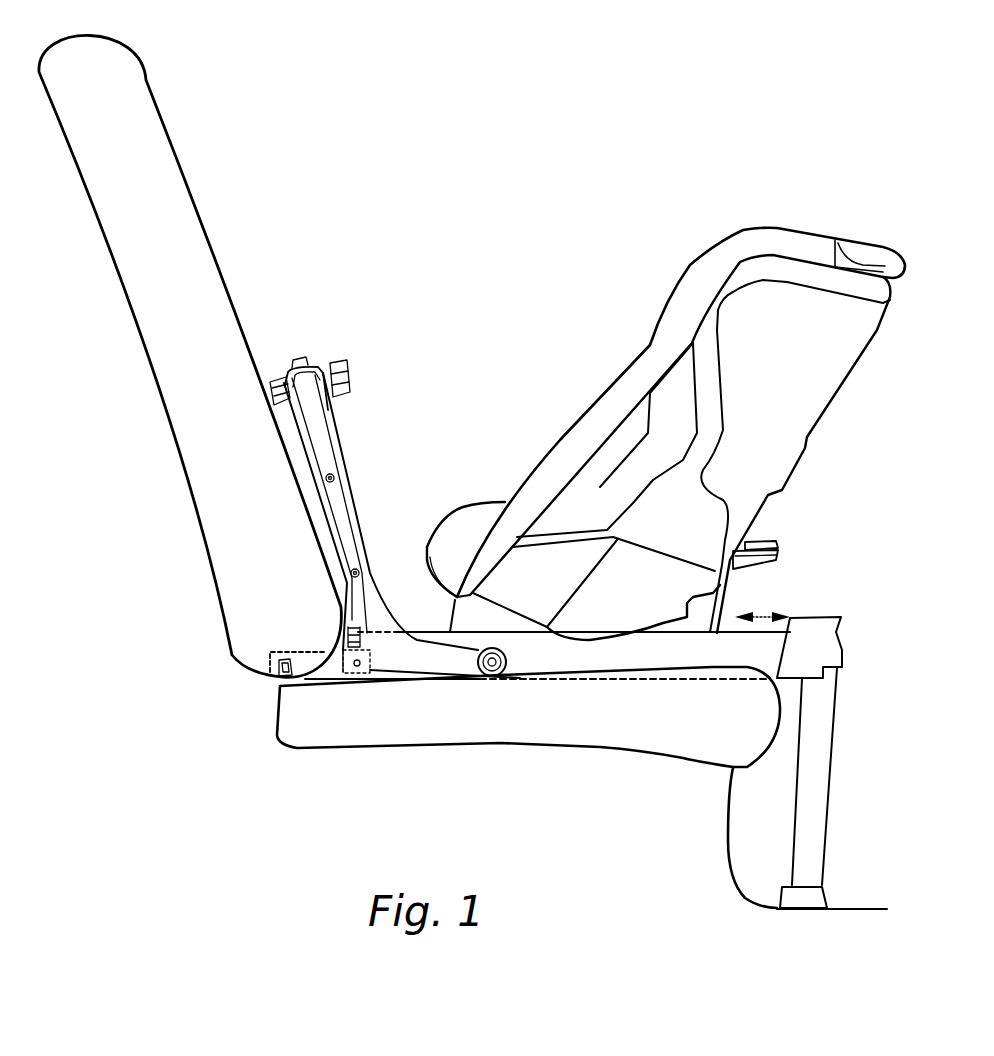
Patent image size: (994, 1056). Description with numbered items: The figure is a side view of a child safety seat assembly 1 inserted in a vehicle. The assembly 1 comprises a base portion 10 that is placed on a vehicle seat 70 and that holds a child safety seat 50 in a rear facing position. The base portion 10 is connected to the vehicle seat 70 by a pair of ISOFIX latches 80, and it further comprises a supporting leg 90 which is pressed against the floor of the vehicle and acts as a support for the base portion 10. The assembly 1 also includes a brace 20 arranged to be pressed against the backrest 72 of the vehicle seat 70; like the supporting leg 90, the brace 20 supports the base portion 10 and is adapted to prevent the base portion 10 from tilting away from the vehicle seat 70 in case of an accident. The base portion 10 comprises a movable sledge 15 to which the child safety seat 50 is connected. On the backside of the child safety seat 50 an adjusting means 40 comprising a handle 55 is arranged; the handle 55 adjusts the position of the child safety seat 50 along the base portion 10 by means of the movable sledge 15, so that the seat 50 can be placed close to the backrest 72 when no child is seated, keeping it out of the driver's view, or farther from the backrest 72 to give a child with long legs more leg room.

The child safety seat assembly 1 is at (471, 378).
The base portion 10 is at (399, 580).
The movable sledge 15 is at (472, 615).
The brace 20 is at (327, 460).
The adjusting means 40 is at (746, 546).
The child safety seat 50 is at (790, 396).
The handle 55 is at (754, 560).
The vehicle seat 70 is at (525, 724).
The backrest 72 is at (175, 356).
The ISOFIX latches 80 is at (318, 675).
The supporting leg 90 is at (813, 807).